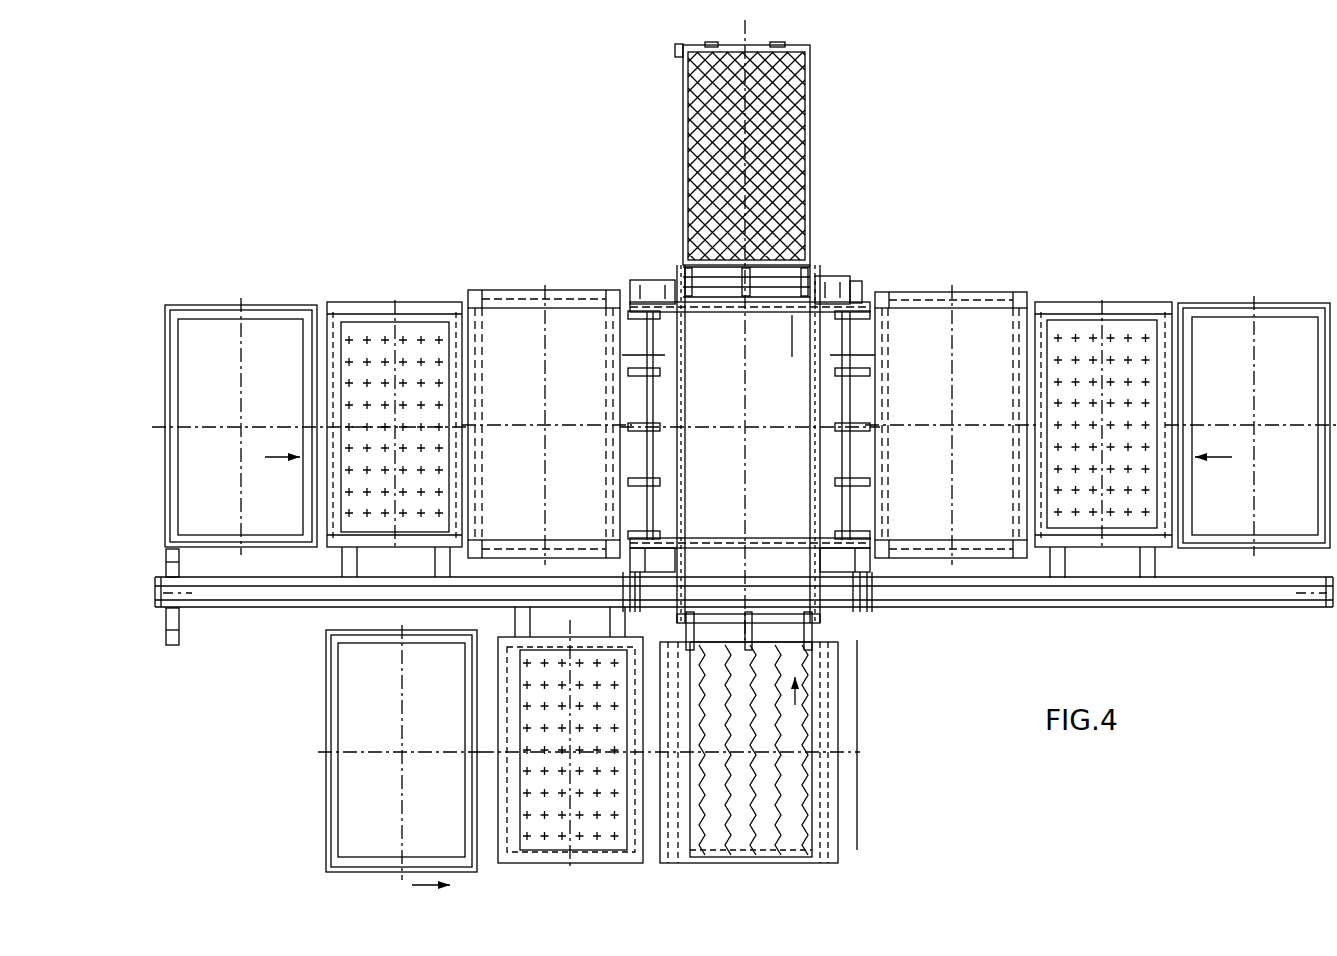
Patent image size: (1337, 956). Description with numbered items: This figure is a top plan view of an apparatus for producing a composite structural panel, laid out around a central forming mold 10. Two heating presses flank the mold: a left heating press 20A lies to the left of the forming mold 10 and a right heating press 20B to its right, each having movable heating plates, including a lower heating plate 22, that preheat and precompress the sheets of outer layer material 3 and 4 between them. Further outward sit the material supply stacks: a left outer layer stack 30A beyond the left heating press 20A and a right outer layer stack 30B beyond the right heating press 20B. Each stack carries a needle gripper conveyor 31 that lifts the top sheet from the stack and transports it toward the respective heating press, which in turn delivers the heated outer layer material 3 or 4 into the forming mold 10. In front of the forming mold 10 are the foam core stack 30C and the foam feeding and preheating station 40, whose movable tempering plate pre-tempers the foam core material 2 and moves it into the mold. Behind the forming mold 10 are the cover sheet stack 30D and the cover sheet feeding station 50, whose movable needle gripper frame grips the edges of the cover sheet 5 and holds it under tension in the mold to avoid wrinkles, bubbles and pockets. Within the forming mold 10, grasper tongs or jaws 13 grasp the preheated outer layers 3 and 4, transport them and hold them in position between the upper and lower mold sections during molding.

The foam core material 2 is at (355, 827).
The outer layer material 3 is at (265, 333).
The outer layer material 4 is at (1130, 325).
The cover sheet 5 is at (806, 127).
The forming mold 10 is at (858, 280).
The grasper tongs or jaws 13 is at (630, 300).
The left heating press 20A is at (527, 282).
The right heating press 20B is at (990, 235).
The lower heating plate 22 is at (576, 328).
The left outer layer stack 30A is at (215, 285).
The right outer layer stack 30B is at (1247, 282).
The foam core stack 30C is at (295, 800).
The cover sheet stack 30D is at (822, 80).
The needle gripper conveyor 31 is at (363, 327).
The foam feeding and preheating station 40 is at (878, 788).
The cover sheet feeding station 50 is at (745, 12).